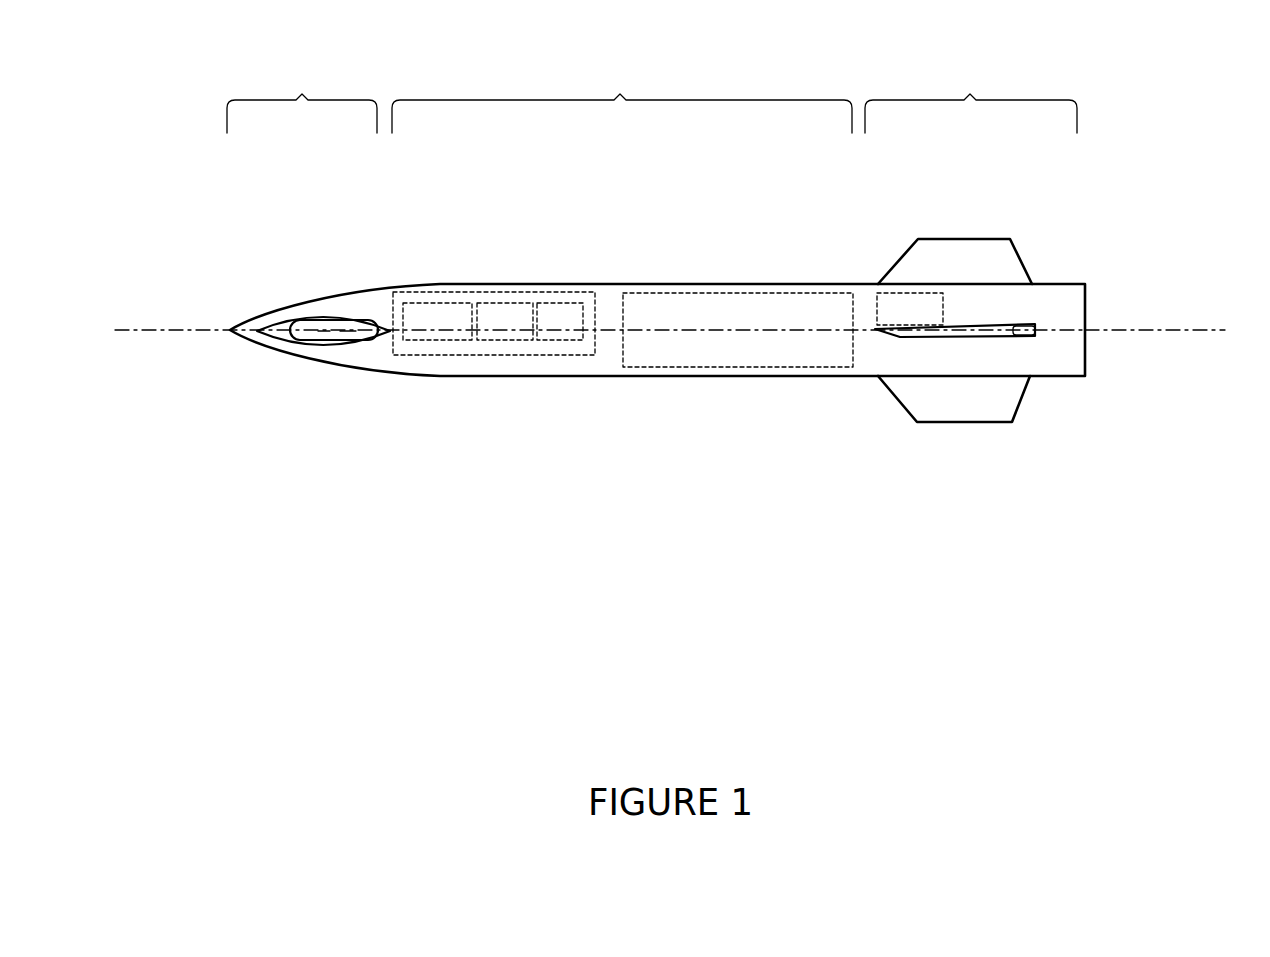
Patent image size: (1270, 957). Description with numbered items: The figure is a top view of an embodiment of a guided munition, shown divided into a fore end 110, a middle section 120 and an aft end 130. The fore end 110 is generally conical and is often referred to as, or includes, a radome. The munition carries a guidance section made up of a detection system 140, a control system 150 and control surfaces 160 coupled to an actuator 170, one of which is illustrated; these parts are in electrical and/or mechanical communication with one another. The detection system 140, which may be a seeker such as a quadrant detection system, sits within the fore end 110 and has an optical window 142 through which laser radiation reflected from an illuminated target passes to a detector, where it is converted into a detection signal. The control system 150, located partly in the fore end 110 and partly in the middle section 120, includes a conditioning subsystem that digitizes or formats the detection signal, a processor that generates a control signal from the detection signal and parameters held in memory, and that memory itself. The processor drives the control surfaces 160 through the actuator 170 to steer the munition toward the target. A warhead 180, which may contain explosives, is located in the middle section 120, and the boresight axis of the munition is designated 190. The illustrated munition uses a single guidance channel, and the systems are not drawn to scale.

The fore end 110 is at (302, 94).
The middle section 120 is at (620, 94).
The aft end 130 is at (970, 94).
The detection system 140 is at (270, 311).
The optical window 142 is at (295, 338).
The control system 150 is at (443, 360).
The control surfaces 160 is at (955, 248).
The actuator 170 is at (885, 303).
The warhead 180 is at (668, 362).
The boresight axis 190 is at (1100, 332).